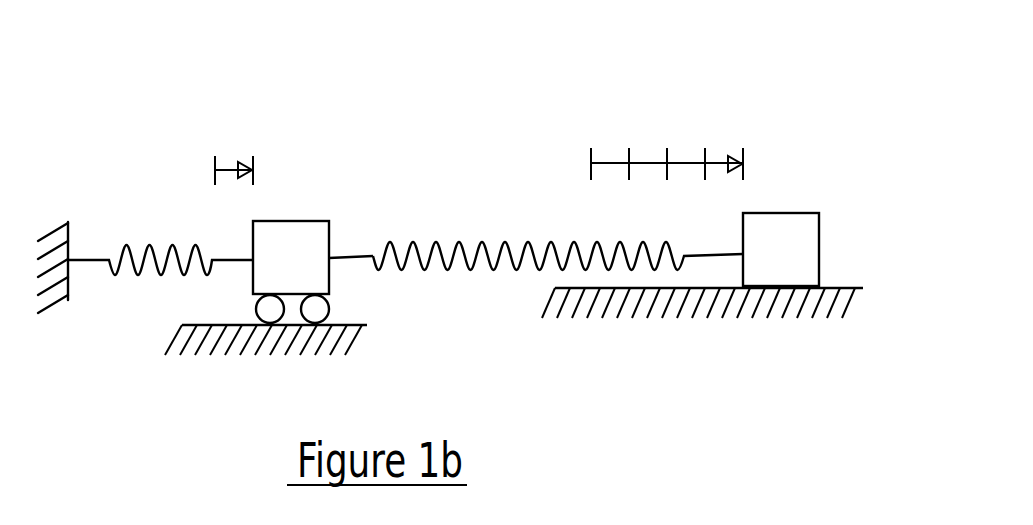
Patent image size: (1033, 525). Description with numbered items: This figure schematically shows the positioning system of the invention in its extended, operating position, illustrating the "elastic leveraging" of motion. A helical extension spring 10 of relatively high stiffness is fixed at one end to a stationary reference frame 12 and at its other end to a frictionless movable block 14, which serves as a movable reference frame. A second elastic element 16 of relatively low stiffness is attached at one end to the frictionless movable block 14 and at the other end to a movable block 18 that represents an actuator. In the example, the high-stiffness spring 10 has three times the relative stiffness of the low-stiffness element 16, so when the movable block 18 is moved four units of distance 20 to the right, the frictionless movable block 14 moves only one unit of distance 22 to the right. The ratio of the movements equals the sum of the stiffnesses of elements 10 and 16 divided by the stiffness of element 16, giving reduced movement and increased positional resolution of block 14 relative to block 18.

The helical extension spring 10 is at (175, 245).
The stationary reference frame 12 is at (68, 228).
The frictionless movable block 14 is at (292, 221).
The second elastic element 16 is at (490, 242).
The movable block 18 is at (788, 213).
The four units of distance 20 is at (683, 163).
The one unit of distance 22 is at (233, 168).